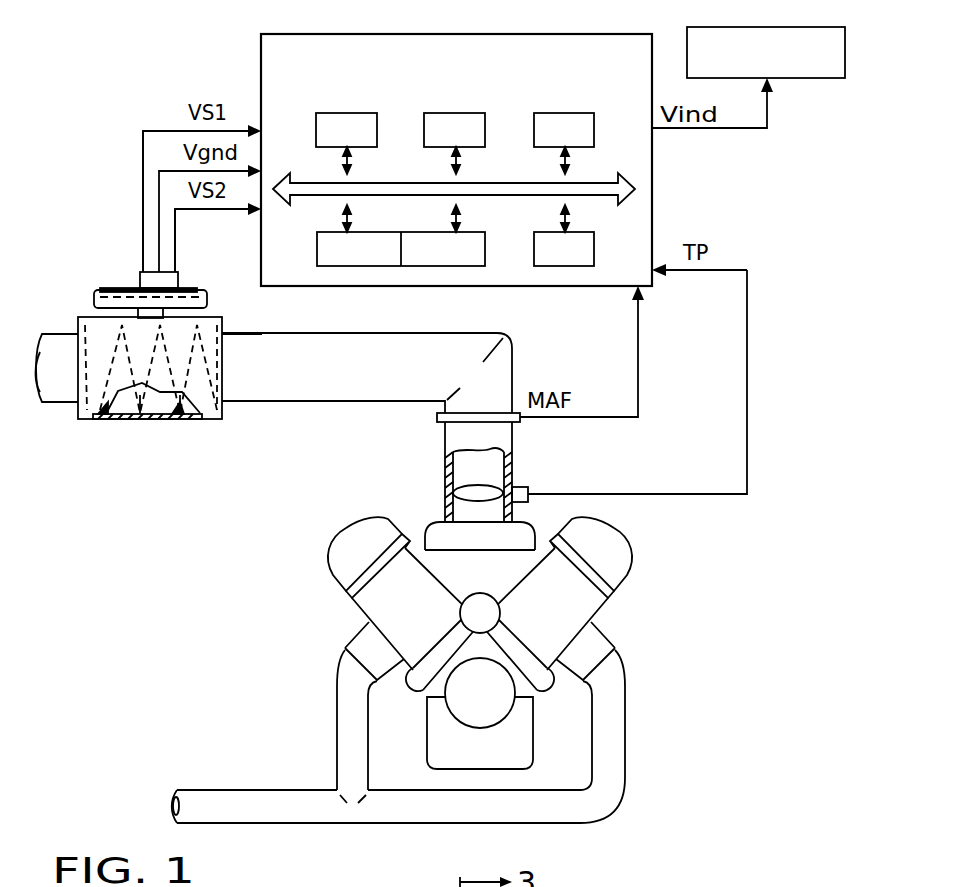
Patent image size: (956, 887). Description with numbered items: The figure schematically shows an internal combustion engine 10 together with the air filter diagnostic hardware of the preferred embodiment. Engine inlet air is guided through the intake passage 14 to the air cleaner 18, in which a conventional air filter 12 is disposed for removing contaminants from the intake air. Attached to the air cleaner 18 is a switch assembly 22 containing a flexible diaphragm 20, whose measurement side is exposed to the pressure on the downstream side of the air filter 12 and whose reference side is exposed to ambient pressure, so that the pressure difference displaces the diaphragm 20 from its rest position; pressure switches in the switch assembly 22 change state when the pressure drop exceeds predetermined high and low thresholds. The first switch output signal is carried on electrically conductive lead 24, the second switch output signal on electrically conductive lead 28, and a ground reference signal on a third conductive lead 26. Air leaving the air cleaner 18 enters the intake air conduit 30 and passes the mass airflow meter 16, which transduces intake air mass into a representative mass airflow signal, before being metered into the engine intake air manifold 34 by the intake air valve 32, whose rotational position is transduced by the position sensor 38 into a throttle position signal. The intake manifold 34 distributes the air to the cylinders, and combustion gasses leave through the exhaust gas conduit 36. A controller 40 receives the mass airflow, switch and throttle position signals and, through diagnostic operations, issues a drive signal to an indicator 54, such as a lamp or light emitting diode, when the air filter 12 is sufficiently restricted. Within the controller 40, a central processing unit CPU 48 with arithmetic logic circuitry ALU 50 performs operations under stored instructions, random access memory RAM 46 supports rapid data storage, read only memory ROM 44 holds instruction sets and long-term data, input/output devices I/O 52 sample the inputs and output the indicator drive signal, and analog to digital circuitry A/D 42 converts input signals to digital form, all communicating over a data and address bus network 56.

The internal combustion engine 10 is at (608, 603).
The air filter 12 is at (127, 420).
The intake passage 14 is at (53, 403).
The mass airflow meter 16 is at (437, 417).
The air cleaner 18 is at (167, 420).
The flexible diaphragm 20 is at (122, 290).
The switch assembly 22 is at (100, 290).
The electrically conductive lead 24 is at (143, 260).
The third conductive lead 26 is at (170, 168).
The electrically conductive lead 28 is at (173, 252).
The intake air conduit 30 is at (503, 360).
The intake air valve 32 is at (465, 488).
The engine intake air manifold 34 is at (440, 535).
The exhaust gas conduit 36 is at (613, 690).
The position sensor 38 is at (520, 487).
The controller 40 is at (284, 40).
The analog to digital circuitry A/D 42 is at (338, 113).
The read only memory devices ROM 44 is at (437, 113).
The random access memory devices RAM 46 is at (540, 113).
The central processing unit CPU 48 is at (320, 233).
The arithmetic logic circuitry ALU 50 is at (432, 233).
The input/output devices I/O 52 is at (540, 233).
The indicator 54 is at (800, 79).
The data and address bus network 56 is at (637, 187).